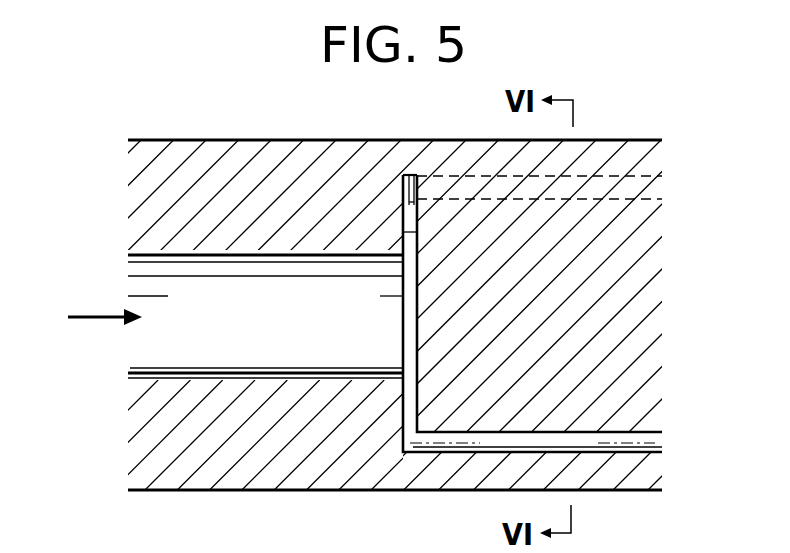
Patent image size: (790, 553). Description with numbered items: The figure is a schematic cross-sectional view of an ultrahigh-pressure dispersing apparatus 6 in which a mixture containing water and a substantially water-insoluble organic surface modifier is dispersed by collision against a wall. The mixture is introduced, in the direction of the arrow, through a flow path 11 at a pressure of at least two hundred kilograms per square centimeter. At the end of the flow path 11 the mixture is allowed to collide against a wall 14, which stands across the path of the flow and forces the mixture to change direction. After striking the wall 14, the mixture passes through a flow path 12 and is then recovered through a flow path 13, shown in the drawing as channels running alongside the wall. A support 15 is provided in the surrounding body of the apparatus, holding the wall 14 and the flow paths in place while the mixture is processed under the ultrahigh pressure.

The ultrahigh-pressure dispersing apparatus 6 is at (210, 128).
The flow path 11 is at (253, 286).
The flow path 12 is at (411, 176).
The flow path 13 is at (501, 190).
The wall 14 is at (410, 328).
The support 15 is at (612, 186).